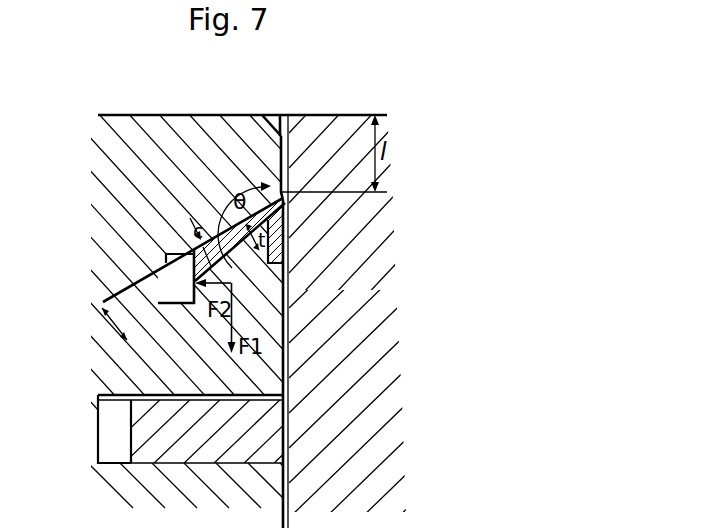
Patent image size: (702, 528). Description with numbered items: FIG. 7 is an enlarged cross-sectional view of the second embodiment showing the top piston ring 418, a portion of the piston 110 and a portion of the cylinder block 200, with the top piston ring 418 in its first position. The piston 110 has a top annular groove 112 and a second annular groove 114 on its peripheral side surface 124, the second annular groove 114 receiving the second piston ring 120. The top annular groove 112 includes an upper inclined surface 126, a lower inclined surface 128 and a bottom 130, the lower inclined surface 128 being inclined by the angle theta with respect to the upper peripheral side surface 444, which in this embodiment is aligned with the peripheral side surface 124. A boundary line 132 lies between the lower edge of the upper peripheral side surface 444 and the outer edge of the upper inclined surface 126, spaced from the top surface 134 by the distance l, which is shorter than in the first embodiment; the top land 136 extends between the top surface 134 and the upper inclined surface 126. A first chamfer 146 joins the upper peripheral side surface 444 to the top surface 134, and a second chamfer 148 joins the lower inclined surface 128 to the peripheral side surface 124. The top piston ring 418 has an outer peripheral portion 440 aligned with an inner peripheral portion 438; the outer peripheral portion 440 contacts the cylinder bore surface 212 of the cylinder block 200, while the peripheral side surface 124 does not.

The piston 110 is at (124, 156).
The top surface 134 is at (130, 118).
The top land 136 is at (232, 138).
The first chamfer 146 is at (284, 114).
The upper peripheral side surface 444 is at (289, 162).
The boundary line 132 is at (287, 197).
The top piston ring 418 is at (289, 211).
The outer peripheral portion 440 is at (280, 232).
The second chamfer 148 is at (284, 262).
The lower inclined surface 128 is at (290, 317).
The cylinder bore surface 212 is at (290, 352).
The cylinder block 200 is at (290, 417).
The second piston ring 120 is at (260, 448).
The peripheral side surface 124 is at (283, 377).
The second annular groove 114 is at (108, 445).
The upper inclined surface 126 is at (165, 275).
The top annular groove 112 is at (153, 292).
The bottom 130 is at (155, 297).
The inner peripheral portion 438 is at (150, 328).